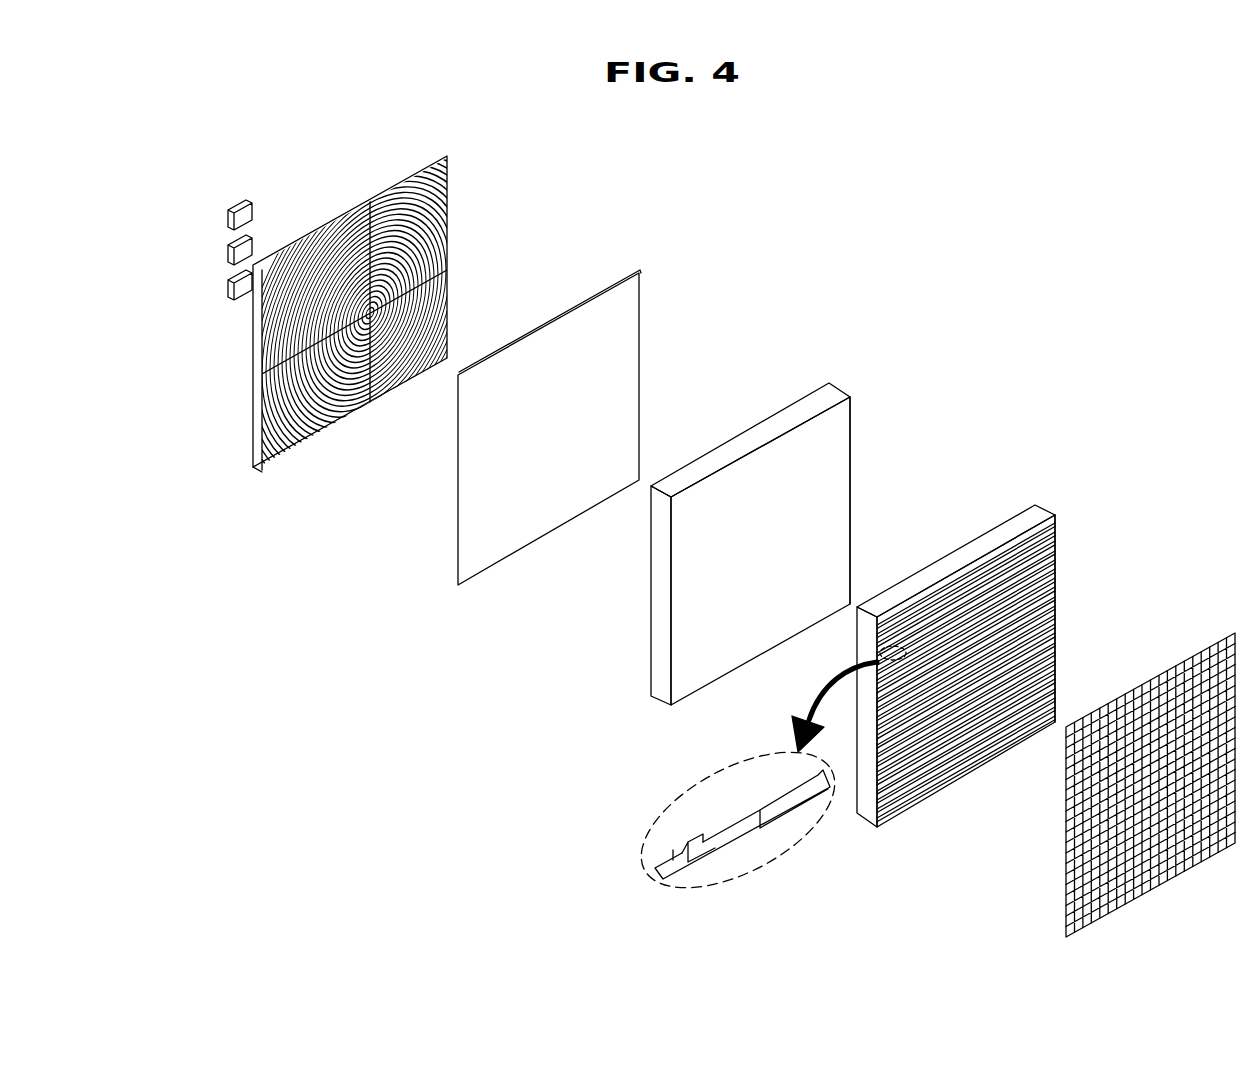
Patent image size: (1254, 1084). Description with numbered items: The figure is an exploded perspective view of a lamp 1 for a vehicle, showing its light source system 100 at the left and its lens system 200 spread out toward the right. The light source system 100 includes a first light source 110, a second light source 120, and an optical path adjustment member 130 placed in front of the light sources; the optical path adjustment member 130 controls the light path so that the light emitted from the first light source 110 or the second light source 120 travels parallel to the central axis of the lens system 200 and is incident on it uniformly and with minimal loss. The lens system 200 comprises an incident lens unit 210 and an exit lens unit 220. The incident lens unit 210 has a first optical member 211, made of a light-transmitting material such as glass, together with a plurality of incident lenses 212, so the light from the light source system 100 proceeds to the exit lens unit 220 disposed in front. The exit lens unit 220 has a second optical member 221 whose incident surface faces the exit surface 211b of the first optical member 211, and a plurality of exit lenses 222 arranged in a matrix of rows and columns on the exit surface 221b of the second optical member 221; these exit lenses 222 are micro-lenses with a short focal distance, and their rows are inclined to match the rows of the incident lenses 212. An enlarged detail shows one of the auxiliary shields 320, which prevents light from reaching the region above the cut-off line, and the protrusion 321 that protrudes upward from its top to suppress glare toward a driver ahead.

The lamp 1 is at (1215, 246).
The light source system 100 is at (337, 151).
The first light source 110 is at (243, 238).
The second light source 120 is at (240, 206).
The optical path adjustment member 130 is at (331, 220).
The lens system 200 is at (1188, 398).
The incident lens unit 210 is at (810, 259).
The first optical member 211 is at (777, 422).
The exit surface 211b is at (850, 432).
The incident lenses 212 is at (612, 284).
The exit lens unit 220 is at (1237, 488).
The second optical member 221 is at (1042, 510).
The exit surface 221b is at (1056, 551).
The exit lenses 222 is at (1228, 630).
The auxiliary shields 320 is at (670, 866).
The protrusion 321 is at (682, 851).